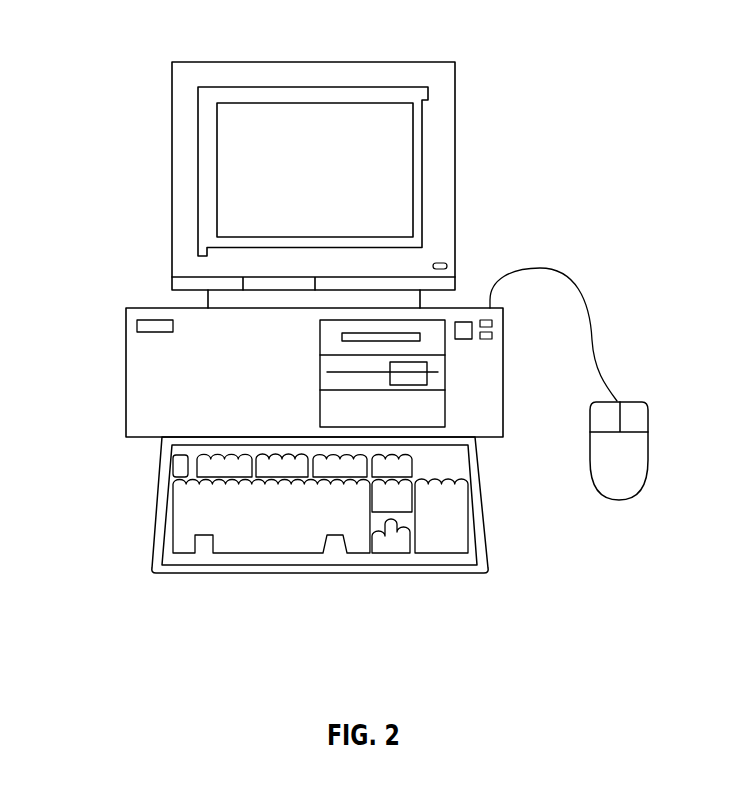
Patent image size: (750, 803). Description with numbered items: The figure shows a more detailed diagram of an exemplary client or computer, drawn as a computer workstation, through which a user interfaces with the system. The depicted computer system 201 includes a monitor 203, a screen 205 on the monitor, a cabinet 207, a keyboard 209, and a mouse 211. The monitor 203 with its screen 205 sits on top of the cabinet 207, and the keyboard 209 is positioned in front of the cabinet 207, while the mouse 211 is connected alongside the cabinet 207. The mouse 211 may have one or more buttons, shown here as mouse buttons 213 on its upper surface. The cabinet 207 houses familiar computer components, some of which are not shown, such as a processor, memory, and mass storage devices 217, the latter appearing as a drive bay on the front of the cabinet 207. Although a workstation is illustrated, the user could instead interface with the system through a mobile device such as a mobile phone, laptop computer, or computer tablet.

The computer system 201 is at (474, 43).
The monitor 203 is at (324, 185).
The screen 205 is at (235, 160).
The cabinet 207 is at (314, 329).
The keyboard 209 is at (200, 570).
The mouse 211 is at (607, 404).
The mouse buttons 213 is at (630, 421).
The mass storage devices 217 is at (437, 322).